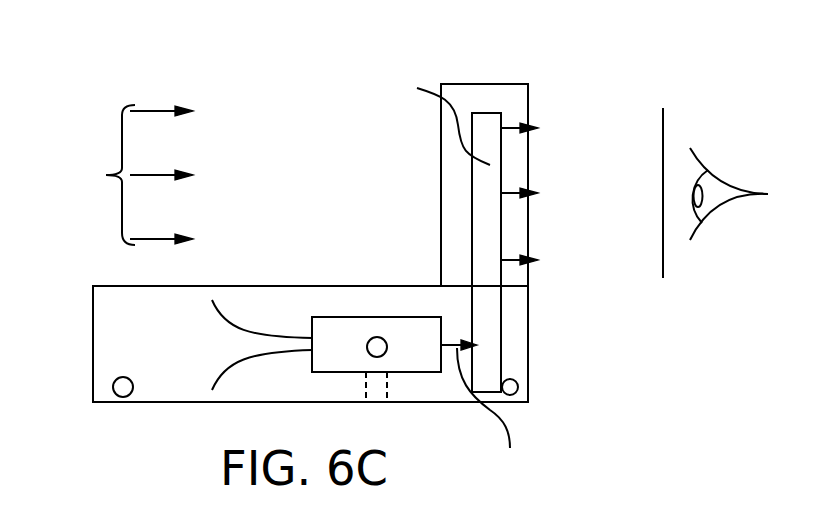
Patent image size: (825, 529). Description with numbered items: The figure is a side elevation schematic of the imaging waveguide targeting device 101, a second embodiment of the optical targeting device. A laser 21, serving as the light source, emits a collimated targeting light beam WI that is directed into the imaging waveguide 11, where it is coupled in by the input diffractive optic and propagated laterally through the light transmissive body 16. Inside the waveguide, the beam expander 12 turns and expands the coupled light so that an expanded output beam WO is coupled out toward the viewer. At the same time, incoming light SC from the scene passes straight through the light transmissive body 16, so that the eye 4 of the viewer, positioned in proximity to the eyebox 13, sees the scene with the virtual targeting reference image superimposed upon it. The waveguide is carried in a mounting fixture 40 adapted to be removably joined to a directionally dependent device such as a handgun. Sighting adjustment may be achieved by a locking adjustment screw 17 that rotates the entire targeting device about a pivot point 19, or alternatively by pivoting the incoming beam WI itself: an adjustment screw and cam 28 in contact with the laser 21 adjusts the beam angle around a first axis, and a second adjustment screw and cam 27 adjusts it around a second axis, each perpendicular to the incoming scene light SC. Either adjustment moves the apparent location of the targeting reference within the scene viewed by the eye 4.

The eye 4 is at (722, 178).
The imaging waveguide 11 is at (540, 329).
The beam expander 12 is at (487, 112).
The eyebox 13 is at (658, 252).
The light transmissive body 16 is at (442, 118).
The locking adjustment screw 17 is at (518, 392).
The pivot point 19 is at (123, 385).
The laser 21 is at (357, 330).
The adjustment screw and cam 27 is at (388, 388).
The adjustment screw and cam 28 is at (380, 342).
The mounting fixture 40 is at (172, 403).
The imaging waveguide targeting device 101 is at (333, 185).
The incoming light from the scene SC is at (557, 300).
The output beam WO is at (518, 190).
The targeting light beam WI is at (490, 410).